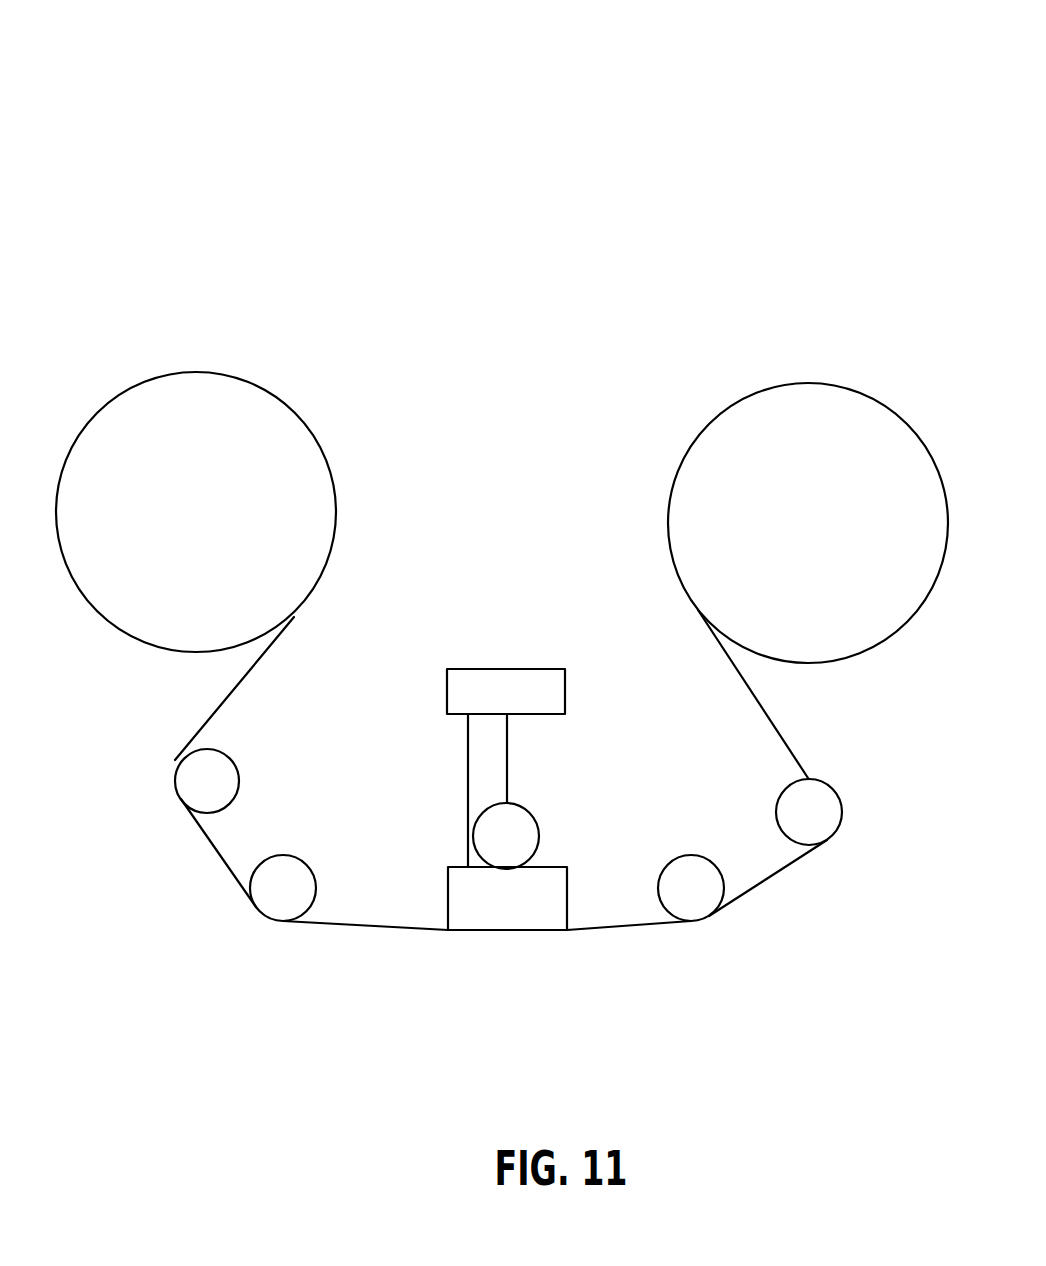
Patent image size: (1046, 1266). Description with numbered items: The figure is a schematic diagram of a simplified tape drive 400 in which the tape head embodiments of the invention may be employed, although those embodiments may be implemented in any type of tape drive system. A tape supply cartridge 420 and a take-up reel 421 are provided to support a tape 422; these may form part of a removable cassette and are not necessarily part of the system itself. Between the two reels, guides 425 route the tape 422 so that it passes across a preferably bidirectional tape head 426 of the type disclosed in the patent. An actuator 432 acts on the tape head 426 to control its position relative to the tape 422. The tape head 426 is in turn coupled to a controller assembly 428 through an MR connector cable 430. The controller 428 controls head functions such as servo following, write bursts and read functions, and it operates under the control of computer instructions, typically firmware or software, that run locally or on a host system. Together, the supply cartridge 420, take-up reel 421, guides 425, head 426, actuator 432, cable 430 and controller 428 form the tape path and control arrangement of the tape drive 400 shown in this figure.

The tape drive 400 is at (243, 178).
The tape supply cartridge 420 is at (197, 373).
The take-up reel 421 is at (809, 382).
The tape 422 is at (370, 927).
The guides 425 is at (241, 771).
The tape head 426 is at (570, 895).
The controller assembly 428 is at (504, 669).
The MR connector cable 430 is at (468, 833).
The actuator 432 is at (532, 811).